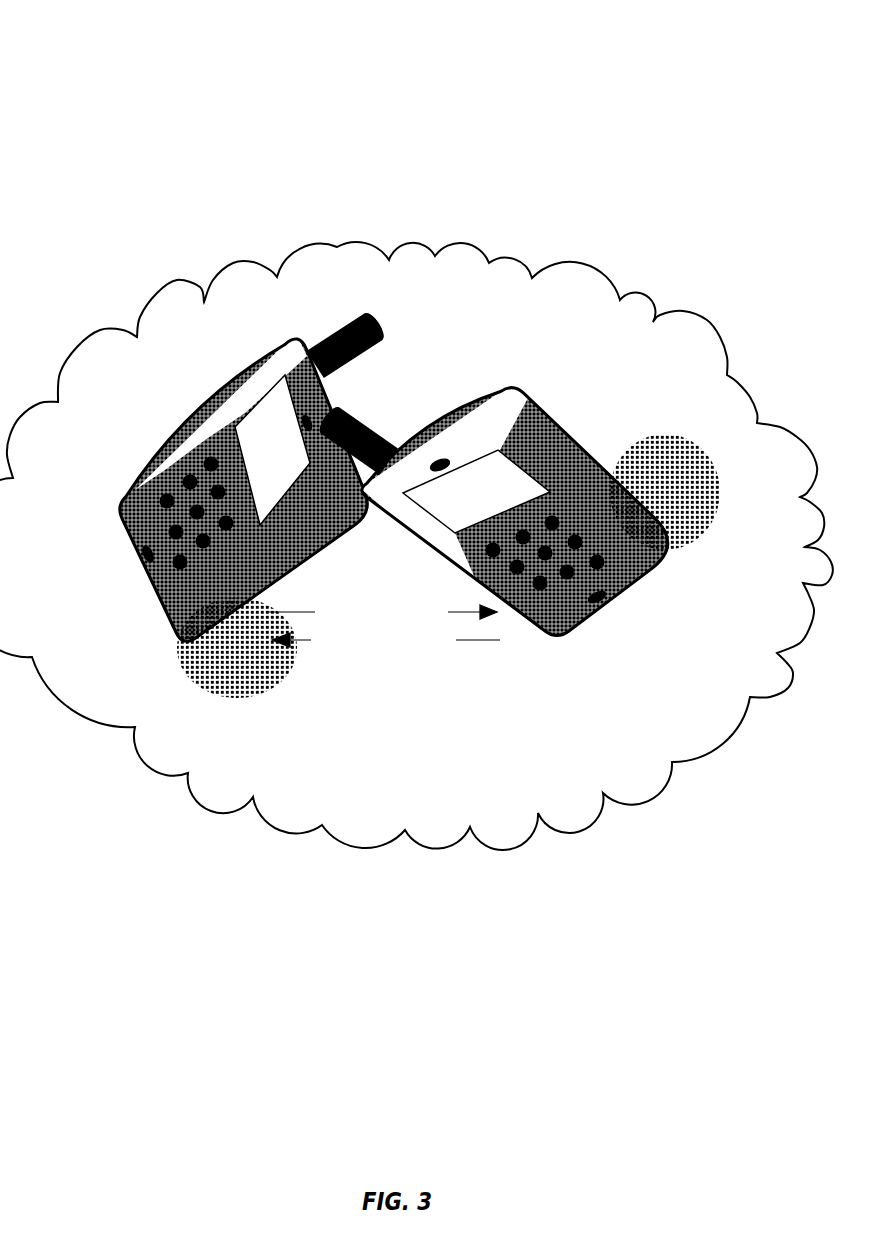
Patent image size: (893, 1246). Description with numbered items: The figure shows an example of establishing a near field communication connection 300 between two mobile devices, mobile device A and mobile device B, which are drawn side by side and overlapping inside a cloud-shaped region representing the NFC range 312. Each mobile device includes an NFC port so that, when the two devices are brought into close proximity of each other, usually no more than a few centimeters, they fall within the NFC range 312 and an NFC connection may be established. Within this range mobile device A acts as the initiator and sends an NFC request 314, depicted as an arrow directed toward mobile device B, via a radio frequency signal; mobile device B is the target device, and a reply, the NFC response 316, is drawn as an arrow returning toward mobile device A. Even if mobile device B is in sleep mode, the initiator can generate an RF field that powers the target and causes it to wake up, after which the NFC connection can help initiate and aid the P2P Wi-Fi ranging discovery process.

The near field communication connection 300 is at (140, 113).
The NFC range 312 is at (416, 546).
The NFC request 314 is at (382, 612).
The NFC response 316 is at (386, 639).